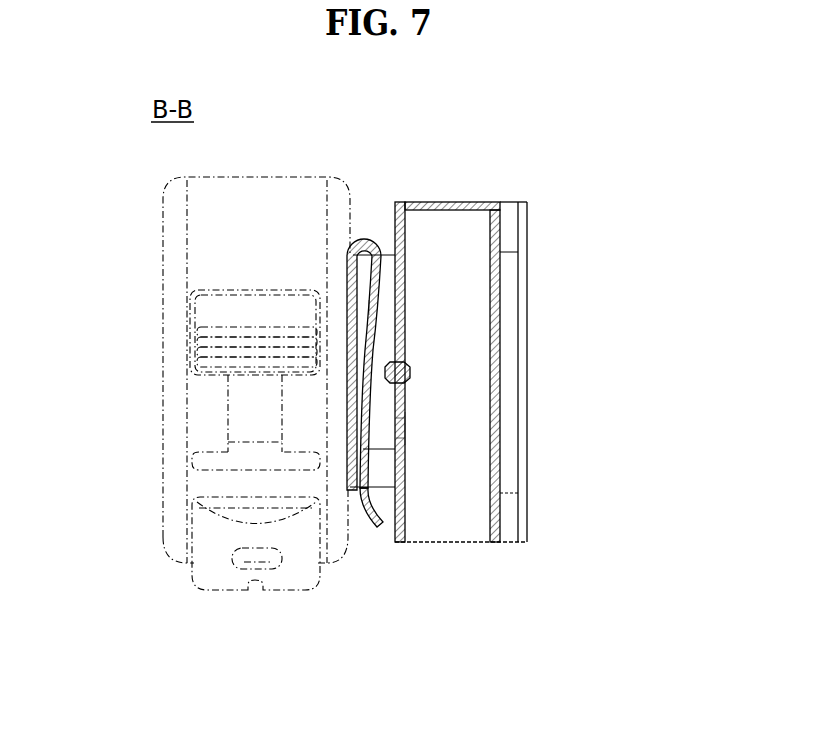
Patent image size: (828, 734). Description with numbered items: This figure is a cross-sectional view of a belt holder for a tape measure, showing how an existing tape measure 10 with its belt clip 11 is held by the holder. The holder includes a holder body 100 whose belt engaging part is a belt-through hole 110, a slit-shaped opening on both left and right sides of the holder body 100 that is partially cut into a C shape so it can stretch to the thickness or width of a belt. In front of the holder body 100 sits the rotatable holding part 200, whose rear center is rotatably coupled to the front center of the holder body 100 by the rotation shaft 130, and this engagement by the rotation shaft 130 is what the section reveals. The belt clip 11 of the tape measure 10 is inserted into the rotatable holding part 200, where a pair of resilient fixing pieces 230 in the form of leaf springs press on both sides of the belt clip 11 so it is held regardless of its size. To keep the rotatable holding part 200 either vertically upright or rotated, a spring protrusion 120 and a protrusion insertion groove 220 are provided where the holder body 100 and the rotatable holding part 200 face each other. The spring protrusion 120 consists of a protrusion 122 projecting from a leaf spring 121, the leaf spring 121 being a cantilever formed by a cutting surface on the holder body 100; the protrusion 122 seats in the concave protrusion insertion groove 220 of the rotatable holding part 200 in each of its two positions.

The tape measure 10 is at (160, 238).
The belt clip 11 is at (362, 239).
The holder body 100 is at (542, 427).
The belt-through hole 110 is at (513, 365).
The spring protrusion 120 is at (641, 405).
The leaf spring 121 is at (405, 418).
The protrusion 122 is at (405, 438).
The rotation shaft 130 is at (405, 365).
The rotatable holding part 200 is at (405, 280).
The protrusion insertion groove 220 is at (363, 437).
The resilient fixing pieces 230 is at (363, 307).